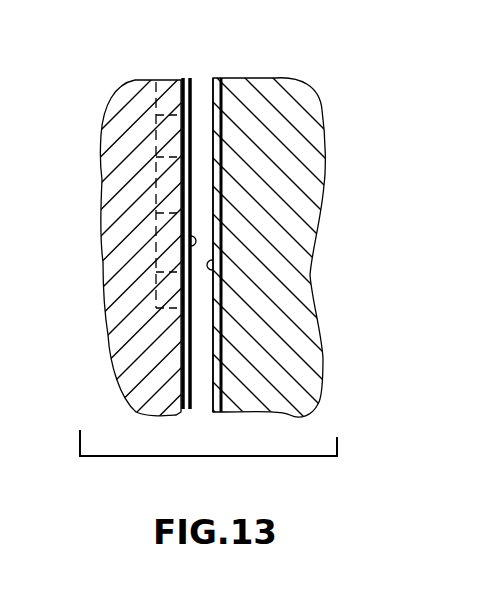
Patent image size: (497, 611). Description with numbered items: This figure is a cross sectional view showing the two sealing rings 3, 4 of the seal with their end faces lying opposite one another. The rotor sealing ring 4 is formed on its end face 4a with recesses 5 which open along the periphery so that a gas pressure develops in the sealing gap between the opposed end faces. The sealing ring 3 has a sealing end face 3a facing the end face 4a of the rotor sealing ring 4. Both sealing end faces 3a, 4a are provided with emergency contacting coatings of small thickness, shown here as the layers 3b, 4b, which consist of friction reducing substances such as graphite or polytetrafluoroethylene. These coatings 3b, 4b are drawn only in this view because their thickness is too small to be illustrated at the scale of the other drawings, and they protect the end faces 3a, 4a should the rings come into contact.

The sealing ring 3 is at (302, 118).
The sealing end face 3a is at (223, 373).
The emergency contacting coating 3b is at (215, 265).
The rotor sealing ring 4 is at (117, 148).
The end face 4a is at (185, 372).
The emergency contacting coating 4b is at (190, 245).
The recesses 5 is at (156, 124).